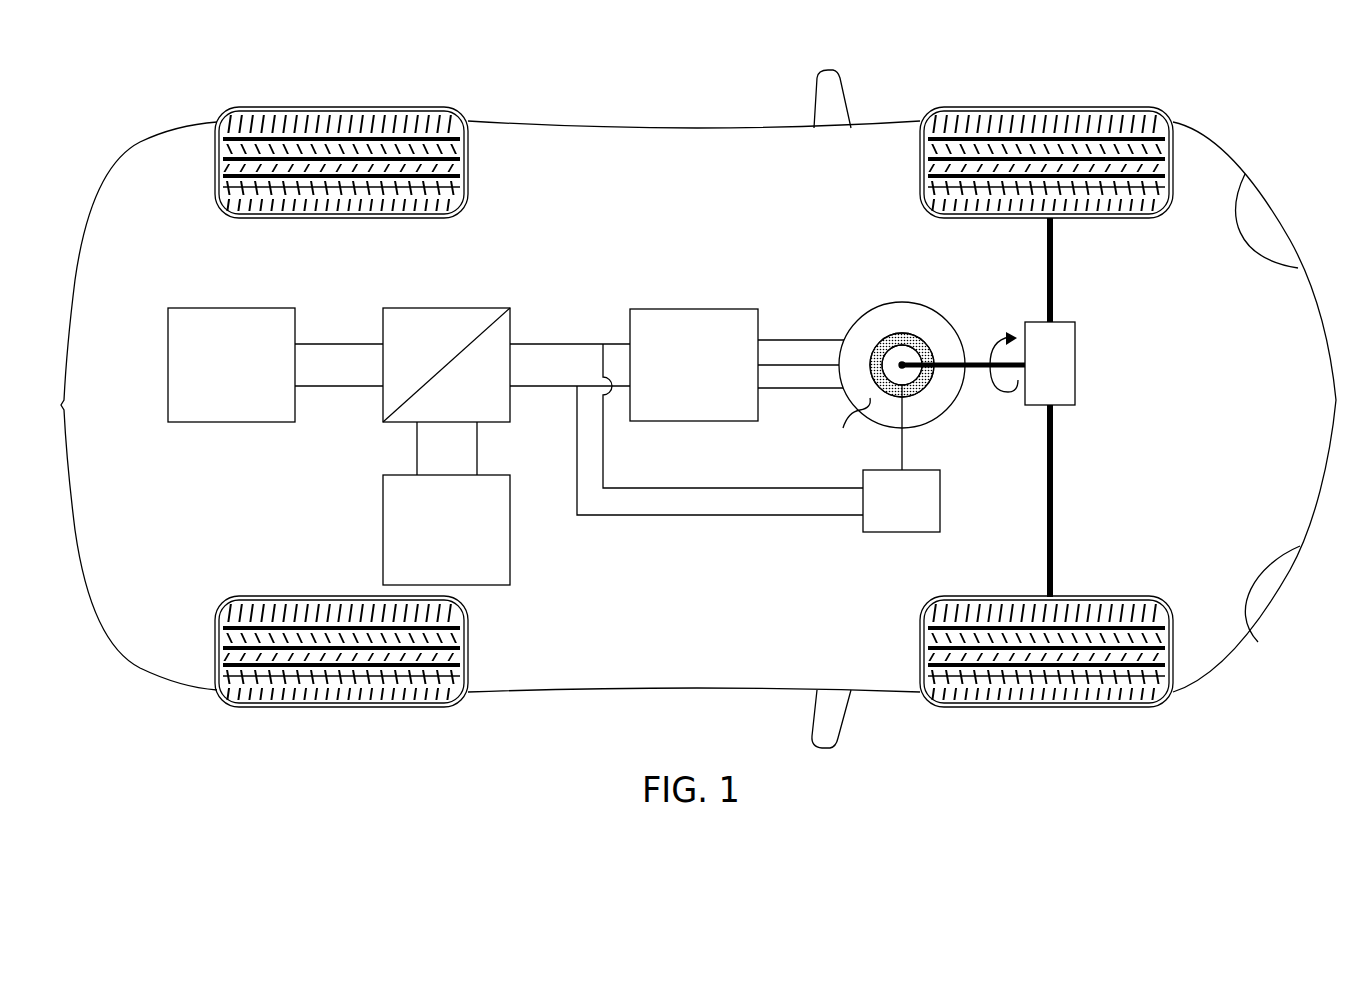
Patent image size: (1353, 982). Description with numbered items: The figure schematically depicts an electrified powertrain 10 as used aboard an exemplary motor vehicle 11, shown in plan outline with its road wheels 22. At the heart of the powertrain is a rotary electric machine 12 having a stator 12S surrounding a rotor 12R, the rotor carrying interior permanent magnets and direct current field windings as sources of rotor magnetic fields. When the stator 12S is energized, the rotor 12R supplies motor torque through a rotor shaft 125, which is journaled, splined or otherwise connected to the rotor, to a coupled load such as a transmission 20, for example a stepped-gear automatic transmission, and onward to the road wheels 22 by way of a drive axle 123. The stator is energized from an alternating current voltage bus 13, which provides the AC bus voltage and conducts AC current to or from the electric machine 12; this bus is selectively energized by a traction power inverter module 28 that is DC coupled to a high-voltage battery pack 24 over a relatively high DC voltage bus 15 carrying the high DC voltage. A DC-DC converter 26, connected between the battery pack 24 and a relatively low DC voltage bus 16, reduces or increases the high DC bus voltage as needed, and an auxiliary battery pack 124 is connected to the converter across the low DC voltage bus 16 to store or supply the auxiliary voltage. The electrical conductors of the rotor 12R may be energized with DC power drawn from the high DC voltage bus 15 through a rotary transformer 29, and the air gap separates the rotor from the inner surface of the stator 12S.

The electrified powertrain 10 is at (698, 409).
The motor vehicle 11 is at (638, 125).
The rotary electric machine 12 is at (916, 353).
The stator 12S is at (880, 313).
The rotor 12R is at (905, 350).
The rotor shaft 125 is at (985, 362).
The drive axle 123 is at (1047, 298).
The AC voltage bus 13 is at (790, 302).
The high DC voltage bus 15 is at (583, 304).
The low DC voltage bus 16 is at (337, 304).
The transmission 20 is at (1050, 363).
The road wheels 22 is at (362, 107).
The high-voltage battery pack 24 is at (446, 530).
The DC-DC converter 26 is at (440, 308).
The traction power inverter module 28 is at (737, 365).
The rotary transformer 29 is at (758, 438).
The auxiliary battery pack 124 is at (231, 365).